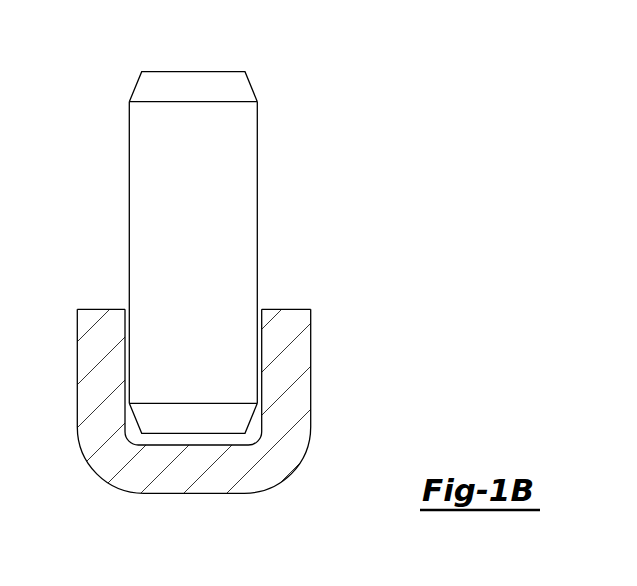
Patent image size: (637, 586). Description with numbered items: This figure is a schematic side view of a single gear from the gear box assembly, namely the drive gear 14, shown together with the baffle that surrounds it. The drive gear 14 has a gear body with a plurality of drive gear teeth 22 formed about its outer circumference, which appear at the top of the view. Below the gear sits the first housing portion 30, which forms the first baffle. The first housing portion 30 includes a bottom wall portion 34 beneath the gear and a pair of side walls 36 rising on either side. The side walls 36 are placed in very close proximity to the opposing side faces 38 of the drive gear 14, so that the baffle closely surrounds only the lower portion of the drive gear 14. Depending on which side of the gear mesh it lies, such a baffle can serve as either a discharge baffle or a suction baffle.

The drive gear 14 is at (197, 230).
The drive gear teeth 22 is at (193, 72).
The first housing portion 30 is at (318, 293).
The bottom wall portion 34 is at (192, 494).
The side walls 36 is at (102, 309).
The side faces 38 is at (129, 140).